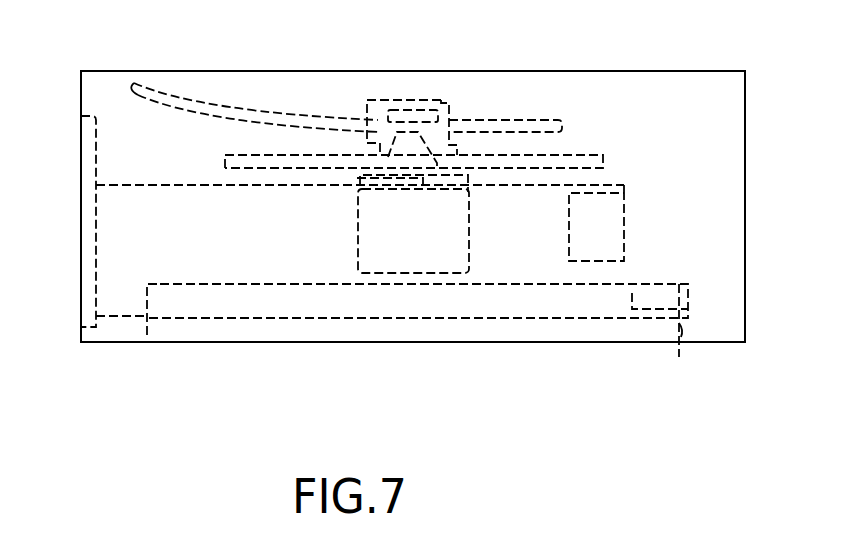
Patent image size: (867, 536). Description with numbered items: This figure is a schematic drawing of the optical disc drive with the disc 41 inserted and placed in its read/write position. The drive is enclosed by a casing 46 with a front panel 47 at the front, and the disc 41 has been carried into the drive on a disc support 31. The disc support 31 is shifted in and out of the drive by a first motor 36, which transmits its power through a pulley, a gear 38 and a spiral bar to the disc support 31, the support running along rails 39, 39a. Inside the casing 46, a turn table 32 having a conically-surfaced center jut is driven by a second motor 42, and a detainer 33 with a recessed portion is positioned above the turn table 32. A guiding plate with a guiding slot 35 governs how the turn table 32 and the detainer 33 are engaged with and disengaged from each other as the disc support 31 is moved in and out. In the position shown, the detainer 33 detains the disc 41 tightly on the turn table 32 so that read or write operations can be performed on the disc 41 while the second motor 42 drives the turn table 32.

The casing 46 is at (608, 71).
The front panel 47 is at (92, 185).
The guiding slot 35 is at (237, 110).
The detainer 33 is at (447, 83).
The disc 41 is at (582, 157).
The turn table 32 is at (397, 165).
The second motor 42 is at (357, 245).
The first motor 36 is at (624, 225).
The disc support 31 is at (127, 292).
The gear 38 is at (632, 293).
The rail 39 is at (668, 336).
The rail 39a is at (701, 356).